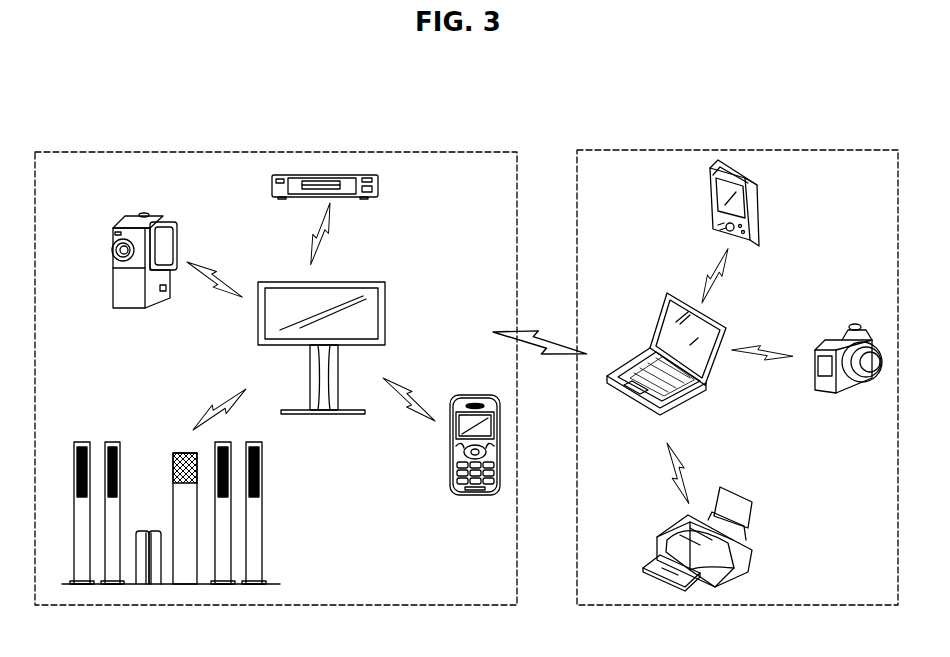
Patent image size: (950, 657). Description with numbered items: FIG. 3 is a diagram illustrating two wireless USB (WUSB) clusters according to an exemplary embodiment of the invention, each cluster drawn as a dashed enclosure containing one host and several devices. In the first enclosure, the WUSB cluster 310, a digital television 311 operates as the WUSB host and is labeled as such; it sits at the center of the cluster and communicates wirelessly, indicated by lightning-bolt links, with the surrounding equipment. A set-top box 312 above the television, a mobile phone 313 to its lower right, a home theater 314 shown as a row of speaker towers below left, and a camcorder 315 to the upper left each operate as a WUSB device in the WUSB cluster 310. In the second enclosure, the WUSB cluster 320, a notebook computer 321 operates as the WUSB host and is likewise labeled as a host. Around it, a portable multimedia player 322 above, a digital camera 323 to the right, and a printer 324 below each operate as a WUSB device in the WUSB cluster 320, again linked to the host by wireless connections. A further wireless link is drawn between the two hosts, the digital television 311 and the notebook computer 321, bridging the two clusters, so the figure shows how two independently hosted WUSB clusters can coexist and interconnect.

The WUSB cluster 310 is at (347, 152).
The digital television 311 is at (385, 312).
The set-top box 312 is at (378, 186).
The mobile phone 313 is at (480, 495).
The home theater 314 is at (262, 530).
The camcorder 315 is at (133, 308).
The WUSB cluster 320 is at (760, 150).
The notebook computer 321 is at (630, 356).
The portable multimedia player 322 is at (757, 205).
The digital camera 323 is at (832, 393).
The printer 324 is at (753, 552).